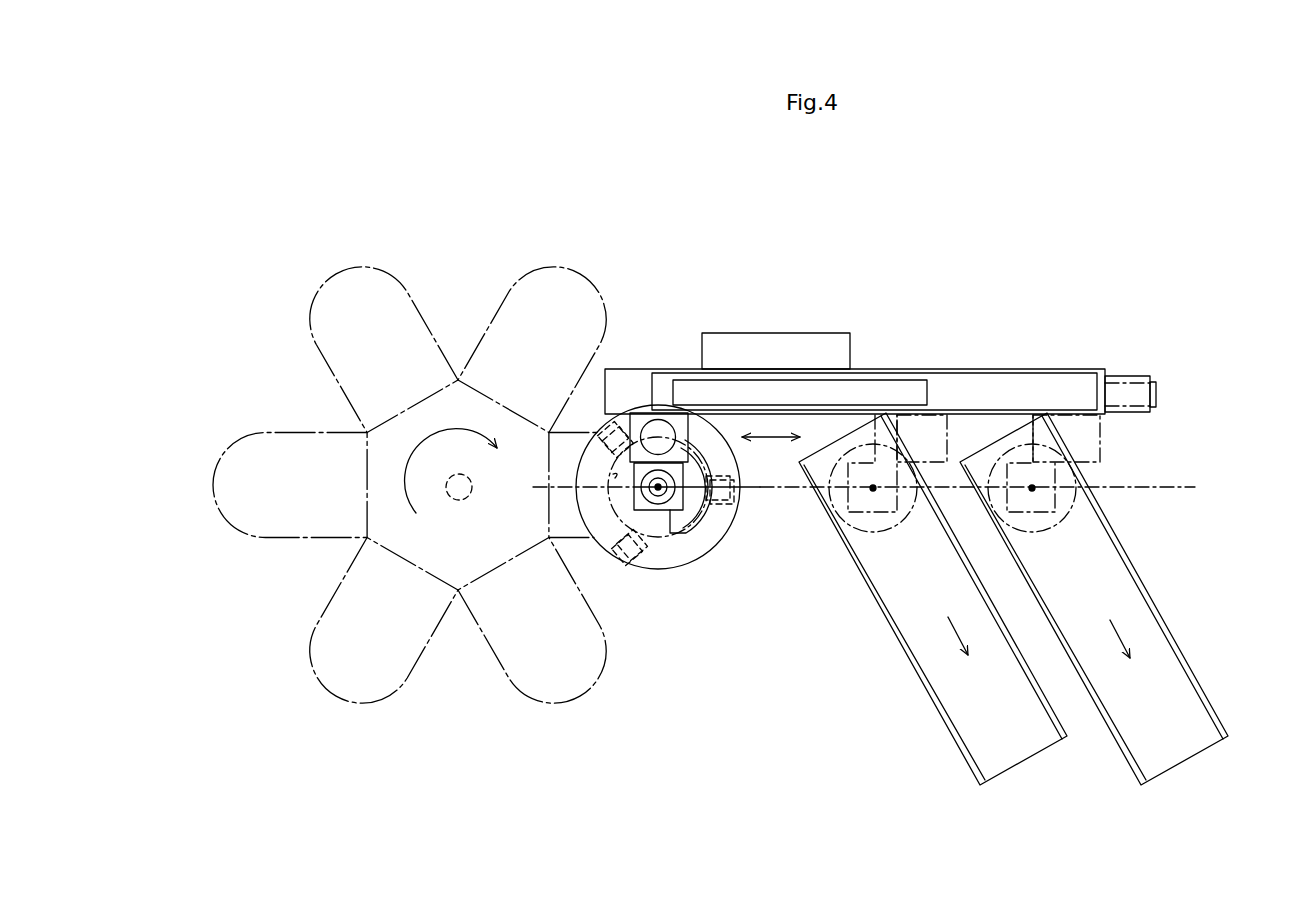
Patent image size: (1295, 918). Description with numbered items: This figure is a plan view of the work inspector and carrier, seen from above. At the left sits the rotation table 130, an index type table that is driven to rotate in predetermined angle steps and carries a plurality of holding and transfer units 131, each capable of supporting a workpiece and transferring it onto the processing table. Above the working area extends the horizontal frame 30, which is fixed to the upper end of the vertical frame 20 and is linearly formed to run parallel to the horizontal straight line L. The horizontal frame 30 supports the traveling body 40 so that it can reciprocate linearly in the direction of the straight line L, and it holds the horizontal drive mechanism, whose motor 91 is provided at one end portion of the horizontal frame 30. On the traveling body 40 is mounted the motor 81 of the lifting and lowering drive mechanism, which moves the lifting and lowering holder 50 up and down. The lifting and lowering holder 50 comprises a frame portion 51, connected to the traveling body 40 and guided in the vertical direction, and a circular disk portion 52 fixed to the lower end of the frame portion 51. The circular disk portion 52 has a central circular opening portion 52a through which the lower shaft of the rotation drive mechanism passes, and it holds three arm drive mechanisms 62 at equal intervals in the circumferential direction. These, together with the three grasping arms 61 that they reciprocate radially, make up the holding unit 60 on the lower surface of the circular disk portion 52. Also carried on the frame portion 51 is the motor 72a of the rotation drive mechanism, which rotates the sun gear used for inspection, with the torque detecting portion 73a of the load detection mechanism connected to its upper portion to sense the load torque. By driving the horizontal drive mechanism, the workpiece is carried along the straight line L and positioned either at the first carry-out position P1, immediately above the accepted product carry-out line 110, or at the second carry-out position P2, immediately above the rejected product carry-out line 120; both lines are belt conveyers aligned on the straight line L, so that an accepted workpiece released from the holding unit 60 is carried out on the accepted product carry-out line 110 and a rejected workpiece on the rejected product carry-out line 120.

The vertical frame 20 is at (835, 345).
The horizontal frame 30 is at (1024, 390).
The traveling body 40 is at (692, 427).
The lifting and lowering holder 50 is at (621, 544).
The frame portion 51 is at (668, 512).
The circular disk portion 52 is at (690, 537).
The circular opening portion 52a is at (574, 487).
The holding unit 60 is at (716, 477).
The grasping arm 61 is at (611, 422).
The arm drive mechanism 62 is at (630, 420).
The motor 72a is at (615, 480).
The torque detecting portion 73a is at (642, 498).
The motor 81 is at (662, 411).
The motor 91 is at (1130, 375).
The accepted product carry-out line 110 is at (918, 678).
The rejected product carry-out line 120 is at (1175, 630).
The rotation table 130 is at (460, 372).
The holding and transfer unit 131 is at (527, 265).
The straight line L is at (1195, 485).
The first carry-out position P1 is at (890, 530).
The second carry-out position P2 is at (1068, 522).